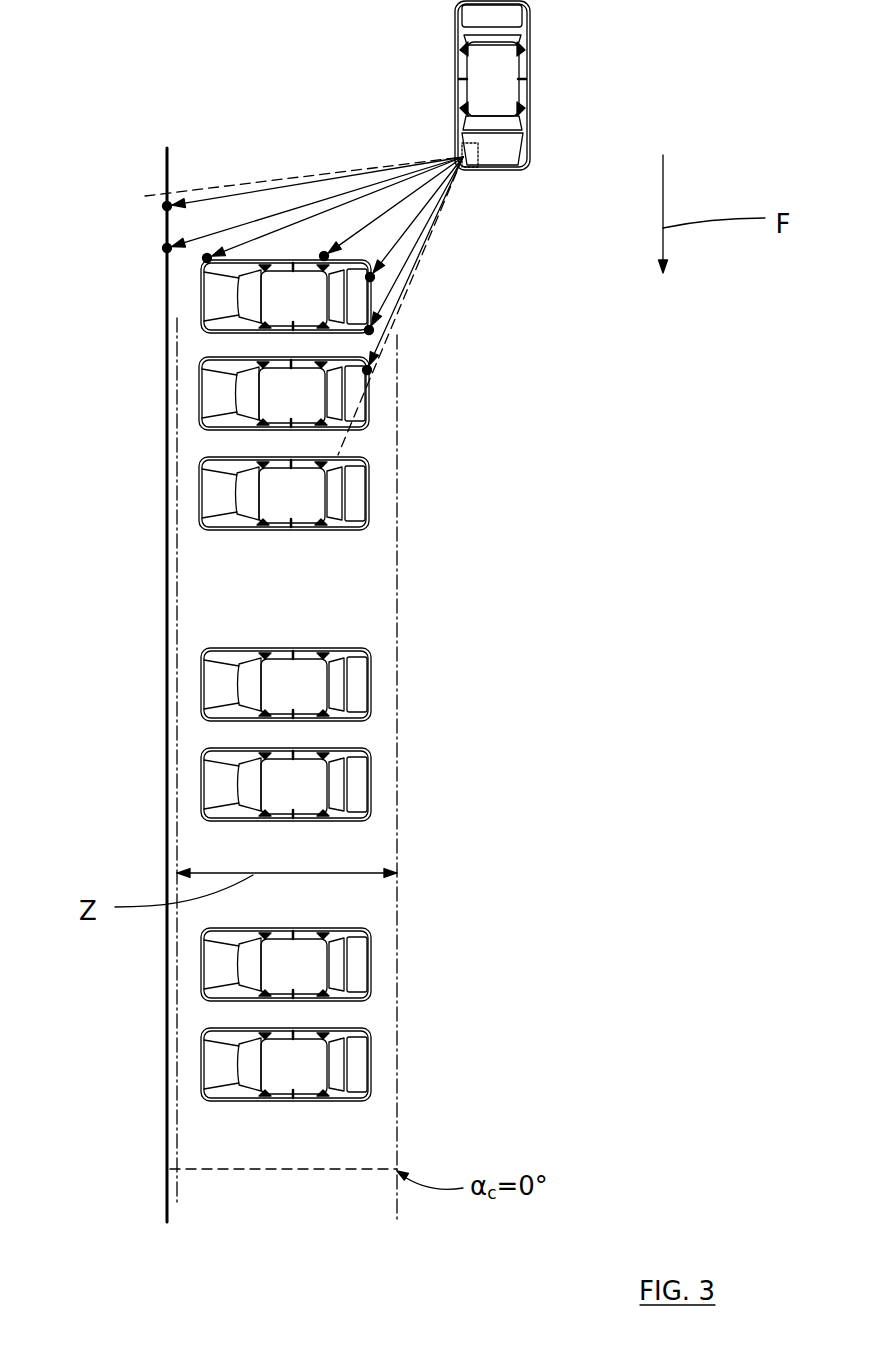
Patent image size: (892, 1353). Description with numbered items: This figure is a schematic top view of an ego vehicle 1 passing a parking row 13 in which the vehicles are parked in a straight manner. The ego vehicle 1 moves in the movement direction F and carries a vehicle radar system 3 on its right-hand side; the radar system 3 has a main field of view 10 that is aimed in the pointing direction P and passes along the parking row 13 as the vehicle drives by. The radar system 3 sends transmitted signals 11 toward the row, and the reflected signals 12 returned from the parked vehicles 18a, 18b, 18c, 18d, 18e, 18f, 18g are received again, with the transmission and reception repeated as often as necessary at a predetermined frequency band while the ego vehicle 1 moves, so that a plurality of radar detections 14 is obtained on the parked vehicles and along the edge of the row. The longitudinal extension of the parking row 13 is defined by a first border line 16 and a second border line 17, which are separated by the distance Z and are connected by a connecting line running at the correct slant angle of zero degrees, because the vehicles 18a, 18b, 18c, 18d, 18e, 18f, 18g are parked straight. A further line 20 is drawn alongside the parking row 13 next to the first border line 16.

The ego vehicle 1 is at (497, 70).
The vehicle radar system 3 is at (470, 163).
The main field of view 10 is at (400, 300).
The transmitted signals 11 is at (317, 194).
The reflected signals 12 is at (352, 233).
The parking row 13 is at (313, 1130).
The radar detections 14 is at (324, 256).
The first border line 16 is at (177, 780).
The second border line 17 is at (398, 785).
The parked vehicle 18a is at (286, 296).
The parked vehicle 18b is at (284, 393).
The parked vehicle 18c is at (284, 493).
The parked vehicle 18d is at (286, 684).
The parked vehicle 18e is at (286, 784).
The parked vehicle 18f is at (286, 964).
The parked vehicle 18g is at (286, 1064).
The lane boundary 20 is at (167, 643).